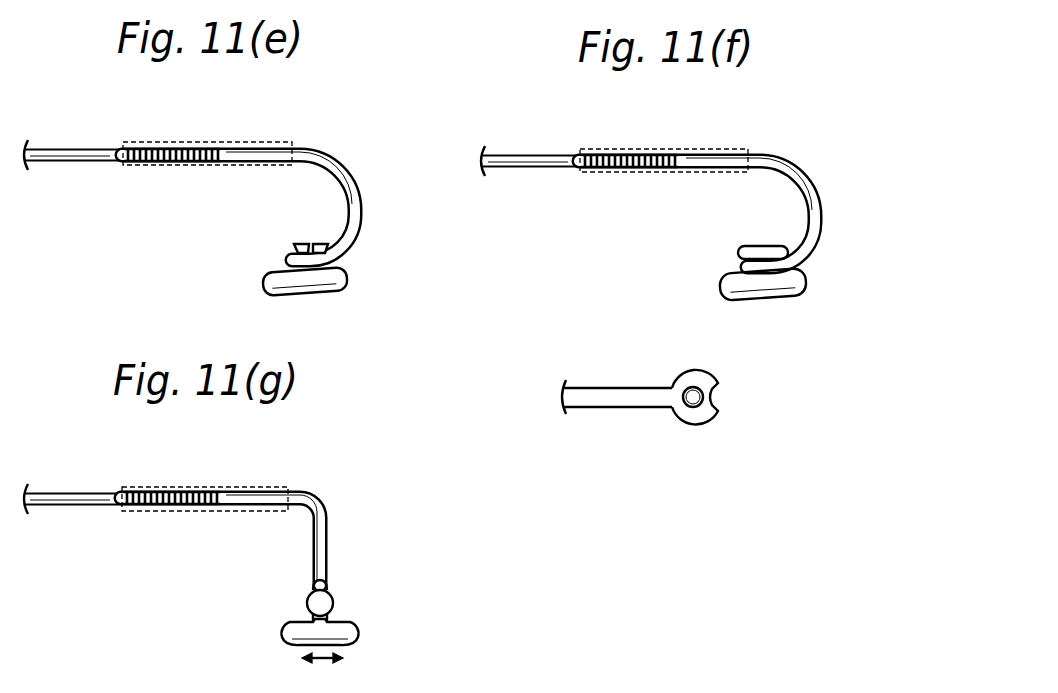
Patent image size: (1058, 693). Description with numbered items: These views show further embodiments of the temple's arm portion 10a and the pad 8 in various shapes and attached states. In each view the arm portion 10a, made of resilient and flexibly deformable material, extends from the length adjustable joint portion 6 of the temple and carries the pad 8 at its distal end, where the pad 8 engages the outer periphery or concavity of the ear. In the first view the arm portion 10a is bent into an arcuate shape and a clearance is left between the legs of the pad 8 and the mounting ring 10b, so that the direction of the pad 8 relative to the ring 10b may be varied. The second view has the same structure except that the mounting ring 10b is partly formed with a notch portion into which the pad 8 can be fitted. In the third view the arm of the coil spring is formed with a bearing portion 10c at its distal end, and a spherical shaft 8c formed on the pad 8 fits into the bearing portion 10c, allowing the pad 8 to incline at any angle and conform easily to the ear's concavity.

In FIG. 11E, the length adjustable joint portion 6 is at (188, 141).
In FIG. 11F, the length adjustable joint portion 6 is at (695, 149).
In FIG. 11G, the length adjustable joint portion 6 is at (246, 486).
In FIG. 11E, the pad 8 is at (347, 285).
In FIG. 11F, the pad 8 is at (807, 290).
In FIG. 11G, the pad 8 is at (360, 630).
In FIG. 11G, the spherical shaft 8c is at (333, 600).
In FIG. 11E, the arm portion 10a is at (362, 190).
In FIG. 11F, the arm portion 10a is at (822, 197).
In FIG. 11G, the arm portion 10a is at (327, 530).
In FIG. 11E, the mounting ring 10b is at (283, 256).
In FIG. 11F, the mounting ring 10b is at (690, 372).
In FIG. 11G, the bearing portion 10c is at (307, 600).